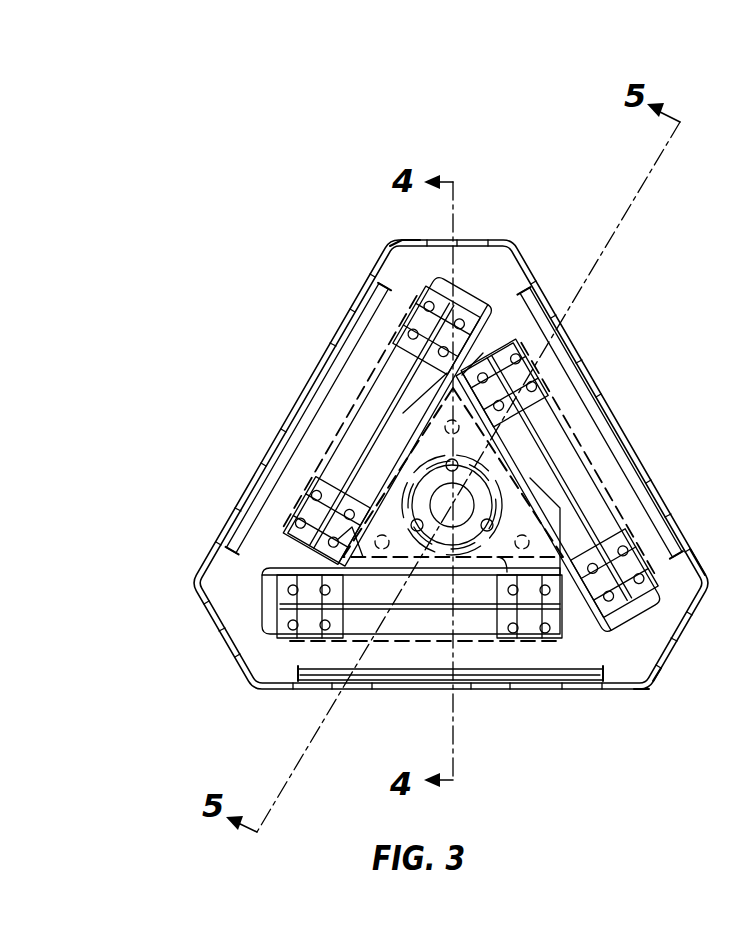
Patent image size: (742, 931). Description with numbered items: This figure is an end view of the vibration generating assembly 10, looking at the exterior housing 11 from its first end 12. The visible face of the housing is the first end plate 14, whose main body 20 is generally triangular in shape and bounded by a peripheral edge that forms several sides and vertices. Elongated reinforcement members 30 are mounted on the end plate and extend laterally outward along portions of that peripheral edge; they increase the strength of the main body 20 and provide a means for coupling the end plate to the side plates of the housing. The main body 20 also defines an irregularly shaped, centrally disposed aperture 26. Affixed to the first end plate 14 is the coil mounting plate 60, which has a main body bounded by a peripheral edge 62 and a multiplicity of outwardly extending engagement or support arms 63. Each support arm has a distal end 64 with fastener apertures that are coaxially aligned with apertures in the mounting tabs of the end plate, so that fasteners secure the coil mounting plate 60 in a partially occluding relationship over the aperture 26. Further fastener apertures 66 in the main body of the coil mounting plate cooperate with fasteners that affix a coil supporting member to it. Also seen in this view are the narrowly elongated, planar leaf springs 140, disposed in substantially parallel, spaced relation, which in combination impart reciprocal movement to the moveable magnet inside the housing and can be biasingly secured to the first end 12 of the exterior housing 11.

The vibration generating assembly 10 is at (518, 163).
The exterior housing 11 is at (487, 240).
The first end 12 is at (656, 690).
The first end plate 14 is at (493, 338).
The main body 20 is at (662, 612).
The centrally disposed aperture 26 is at (432, 268).
The reinforcement members 30 is at (318, 388).
The coil mounting plate 60 is at (307, 690).
The peripheral edge 62 is at (528, 373).
The support arms 63 is at (300, 580).
The distal end 64 is at (337, 542).
The fastener apertures 66 is at (380, 683).
The leaf springs 140 is at (360, 426).